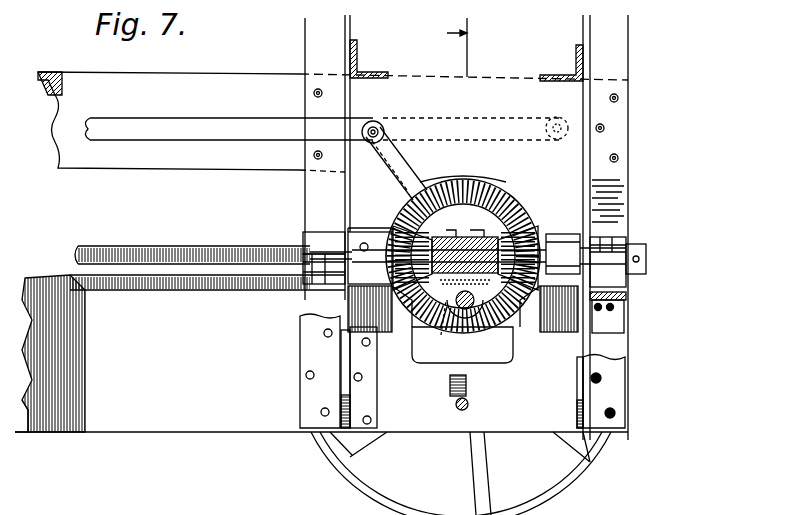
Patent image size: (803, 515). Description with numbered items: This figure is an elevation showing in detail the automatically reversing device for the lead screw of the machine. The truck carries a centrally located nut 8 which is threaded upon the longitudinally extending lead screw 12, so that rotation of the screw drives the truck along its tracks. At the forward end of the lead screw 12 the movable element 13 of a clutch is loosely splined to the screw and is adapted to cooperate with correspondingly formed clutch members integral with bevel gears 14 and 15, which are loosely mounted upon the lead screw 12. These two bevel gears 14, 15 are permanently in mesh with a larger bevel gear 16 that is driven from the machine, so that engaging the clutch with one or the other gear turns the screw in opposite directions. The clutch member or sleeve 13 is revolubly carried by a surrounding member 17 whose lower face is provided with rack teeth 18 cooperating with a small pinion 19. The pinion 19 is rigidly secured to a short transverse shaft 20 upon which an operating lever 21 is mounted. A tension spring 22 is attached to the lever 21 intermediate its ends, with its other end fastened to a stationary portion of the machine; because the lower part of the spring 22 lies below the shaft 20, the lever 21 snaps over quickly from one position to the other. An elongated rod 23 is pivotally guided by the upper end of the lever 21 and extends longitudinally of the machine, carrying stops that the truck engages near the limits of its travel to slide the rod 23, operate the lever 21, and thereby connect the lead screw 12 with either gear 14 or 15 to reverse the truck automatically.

The nut 8 is at (457, 46).
The lead screw 12 is at (212, 244).
The movable clutch element 13 is at (491, 325).
The bevel gear 14 is at (540, 240).
The bevel gear 15 is at (392, 214).
The larger bevel gear 16 is at (524, 216).
The surrounding member 17 is at (507, 186).
The rack teeth 18 is at (441, 335).
The pinion 19 is at (455, 312).
The transverse shaft 20 is at (484, 323).
The operating lever 21 is at (400, 160).
The tension spring 22 is at (468, 388).
The elongated rod 23 is at (116, 130).